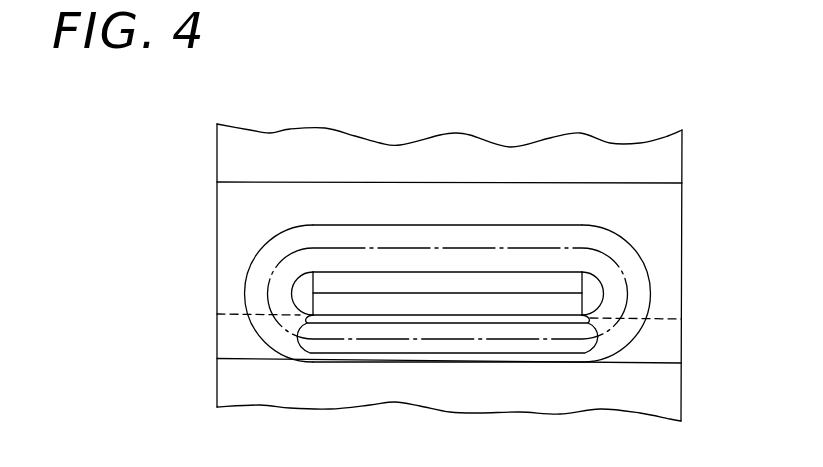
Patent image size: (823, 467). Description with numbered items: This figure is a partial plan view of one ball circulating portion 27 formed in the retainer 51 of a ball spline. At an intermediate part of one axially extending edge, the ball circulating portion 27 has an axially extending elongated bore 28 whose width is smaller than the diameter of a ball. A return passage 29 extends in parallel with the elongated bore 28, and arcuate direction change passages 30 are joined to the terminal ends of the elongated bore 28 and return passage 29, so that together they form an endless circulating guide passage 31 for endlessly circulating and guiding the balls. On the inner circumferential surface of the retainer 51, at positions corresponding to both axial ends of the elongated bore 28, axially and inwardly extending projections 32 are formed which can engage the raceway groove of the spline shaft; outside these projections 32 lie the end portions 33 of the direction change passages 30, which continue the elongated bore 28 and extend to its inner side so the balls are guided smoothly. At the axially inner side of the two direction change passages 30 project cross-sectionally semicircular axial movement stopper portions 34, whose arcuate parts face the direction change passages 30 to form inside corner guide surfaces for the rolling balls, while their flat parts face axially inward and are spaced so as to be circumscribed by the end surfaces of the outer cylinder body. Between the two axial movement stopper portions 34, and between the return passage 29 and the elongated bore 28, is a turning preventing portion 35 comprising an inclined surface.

The ball circulating portion 27 is at (266, 240).
The elongated bore 28 is at (521, 362).
The return passage 29 is at (472, 235).
The direction change passage 30 is at (255, 273).
The endless circulating guide passage 31 is at (418, 248).
The inwardly extending projection 32 is at (240, 338).
The end portion 33 is at (338, 346).
The axial movement stopper portion 34 is at (305, 290).
The turning preventing portion 35 is at (525, 283).
The retainer 51 is at (595, 398).